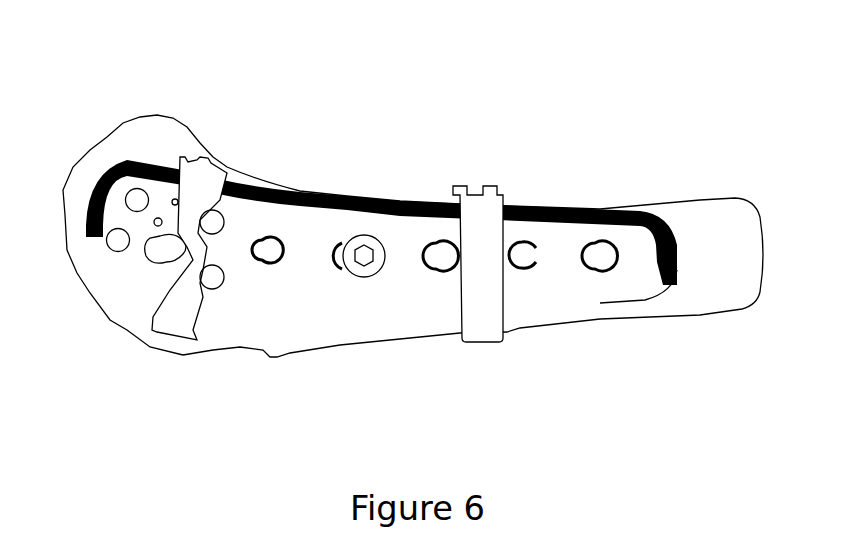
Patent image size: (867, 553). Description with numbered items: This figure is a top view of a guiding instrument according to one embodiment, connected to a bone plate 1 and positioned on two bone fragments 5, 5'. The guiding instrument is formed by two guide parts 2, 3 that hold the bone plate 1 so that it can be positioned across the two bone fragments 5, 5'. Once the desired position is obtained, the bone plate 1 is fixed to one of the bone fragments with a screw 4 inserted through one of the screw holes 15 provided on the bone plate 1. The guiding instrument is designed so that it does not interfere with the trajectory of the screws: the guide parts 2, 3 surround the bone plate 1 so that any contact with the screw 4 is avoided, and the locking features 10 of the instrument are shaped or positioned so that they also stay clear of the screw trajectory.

The bone plate 1 is at (400, 255).
The guide part of a guiding instrument 2 is at (388, 285).
The guide part of a guiding instrument 3 is at (257, 197).
The screw 4 is at (348, 250).
The bone fragment 5 is at (473, 291).
The bone fragment 5' is at (134, 198).
The locking features 10 is at (202, 193).
The screw hole 15 is at (213, 283).